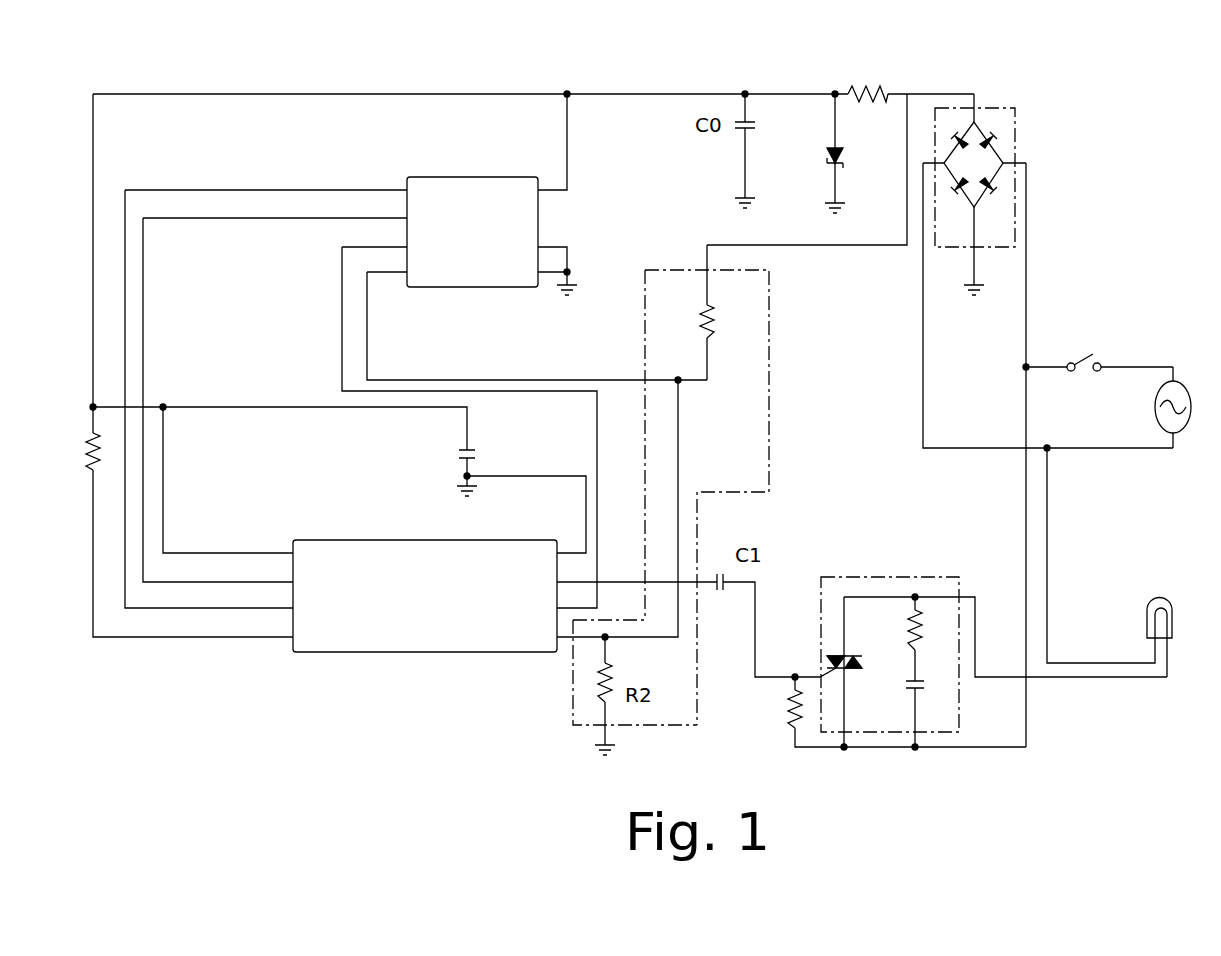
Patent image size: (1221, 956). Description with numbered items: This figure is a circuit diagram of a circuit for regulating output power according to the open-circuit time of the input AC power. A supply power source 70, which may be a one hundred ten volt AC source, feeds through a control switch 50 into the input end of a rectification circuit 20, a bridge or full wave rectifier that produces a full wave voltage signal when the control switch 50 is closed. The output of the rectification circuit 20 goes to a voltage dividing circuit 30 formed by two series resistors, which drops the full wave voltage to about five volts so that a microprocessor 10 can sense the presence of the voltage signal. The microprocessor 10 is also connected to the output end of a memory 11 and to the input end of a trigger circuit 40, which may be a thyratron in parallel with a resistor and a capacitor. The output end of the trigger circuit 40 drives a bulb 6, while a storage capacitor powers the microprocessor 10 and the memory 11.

The microprocessor 10 is at (489, 653).
The memory 11 is at (404, 176).
The rectification circuit 20 is at (1015, 108).
The voltage dividing circuit 30 is at (772, 398).
The trigger circuit 40 is at (893, 577).
The control switch 50 is at (1073, 357).
The supply power source 70 is at (1181, 387).
The bulb 6 is at (1147, 608).